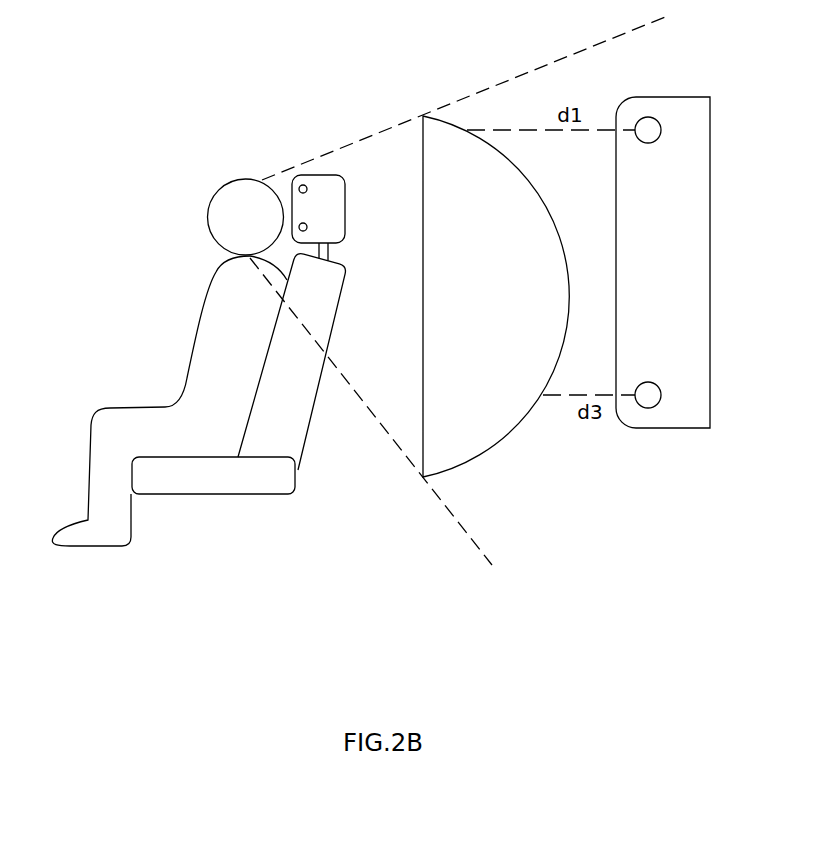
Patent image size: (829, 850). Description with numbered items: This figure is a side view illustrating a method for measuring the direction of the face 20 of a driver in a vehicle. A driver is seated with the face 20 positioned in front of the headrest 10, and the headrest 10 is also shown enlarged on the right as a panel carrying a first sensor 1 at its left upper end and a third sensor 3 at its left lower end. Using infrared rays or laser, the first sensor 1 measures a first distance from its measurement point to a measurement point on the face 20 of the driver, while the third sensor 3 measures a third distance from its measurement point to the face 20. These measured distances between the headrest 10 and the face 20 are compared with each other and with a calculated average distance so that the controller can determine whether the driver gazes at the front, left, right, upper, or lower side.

The first sensor 1 is at (303, 188).
The third sensor 3 is at (307, 228).
The headrest 10 is at (332, 208).
The face of the driver 20 is at (243, 193).